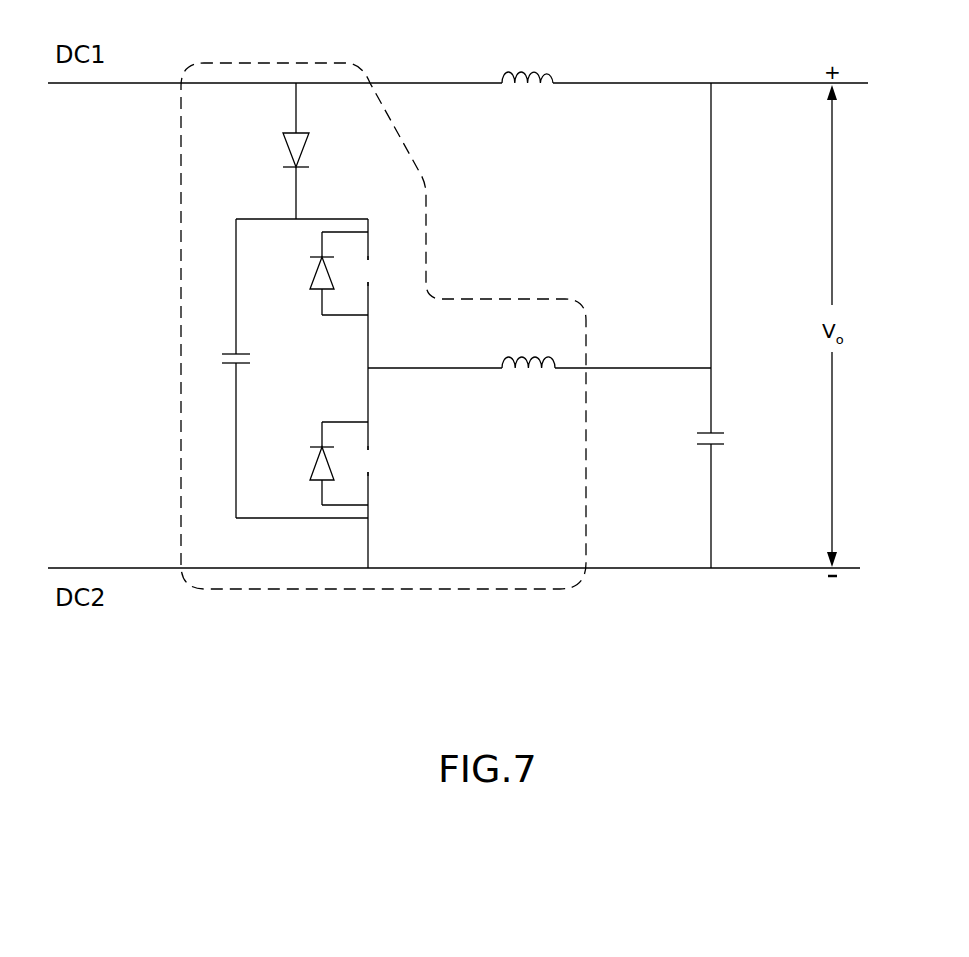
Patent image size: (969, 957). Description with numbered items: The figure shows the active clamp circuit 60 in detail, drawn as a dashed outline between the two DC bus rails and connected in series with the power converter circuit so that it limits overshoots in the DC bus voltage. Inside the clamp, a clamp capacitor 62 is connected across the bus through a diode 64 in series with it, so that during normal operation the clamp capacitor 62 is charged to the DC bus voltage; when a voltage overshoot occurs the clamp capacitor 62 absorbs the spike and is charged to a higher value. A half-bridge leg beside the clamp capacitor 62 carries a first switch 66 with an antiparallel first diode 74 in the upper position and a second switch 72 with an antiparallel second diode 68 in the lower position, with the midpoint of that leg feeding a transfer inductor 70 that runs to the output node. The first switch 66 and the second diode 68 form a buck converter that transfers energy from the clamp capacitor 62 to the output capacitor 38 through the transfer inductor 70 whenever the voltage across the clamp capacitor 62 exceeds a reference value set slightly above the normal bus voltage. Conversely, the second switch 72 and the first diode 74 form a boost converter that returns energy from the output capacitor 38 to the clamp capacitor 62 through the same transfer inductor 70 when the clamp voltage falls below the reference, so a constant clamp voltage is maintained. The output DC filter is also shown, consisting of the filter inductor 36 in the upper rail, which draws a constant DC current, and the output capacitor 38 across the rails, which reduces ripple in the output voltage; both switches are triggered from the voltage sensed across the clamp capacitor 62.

The active clamp circuit 60 is at (273, 62).
The diode 64 is at (285, 150).
The capacitor C1 62 is at (228, 352).
The switch S1 66 is at (381, 278).
The diode D1 74 is at (316, 292).
The switch S2 72 is at (381, 467).
The diode D2 68 is at (316, 482).
The inductor Lo 36 is at (553, 75).
The inductor L2 70 is at (520, 372).
The capacitor Co 38 is at (720, 432).